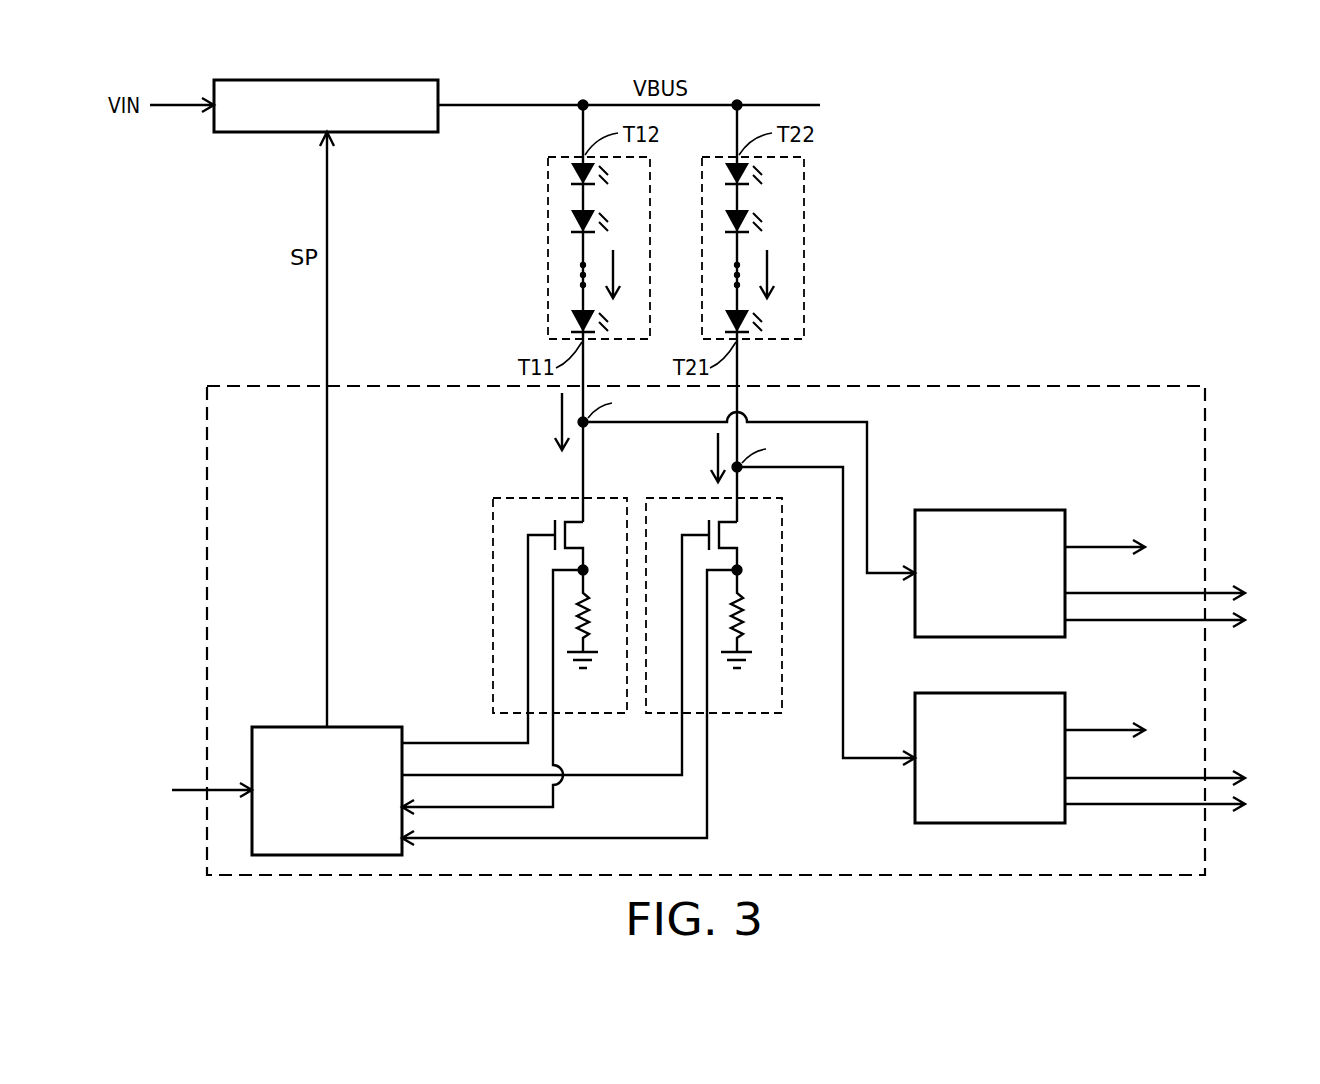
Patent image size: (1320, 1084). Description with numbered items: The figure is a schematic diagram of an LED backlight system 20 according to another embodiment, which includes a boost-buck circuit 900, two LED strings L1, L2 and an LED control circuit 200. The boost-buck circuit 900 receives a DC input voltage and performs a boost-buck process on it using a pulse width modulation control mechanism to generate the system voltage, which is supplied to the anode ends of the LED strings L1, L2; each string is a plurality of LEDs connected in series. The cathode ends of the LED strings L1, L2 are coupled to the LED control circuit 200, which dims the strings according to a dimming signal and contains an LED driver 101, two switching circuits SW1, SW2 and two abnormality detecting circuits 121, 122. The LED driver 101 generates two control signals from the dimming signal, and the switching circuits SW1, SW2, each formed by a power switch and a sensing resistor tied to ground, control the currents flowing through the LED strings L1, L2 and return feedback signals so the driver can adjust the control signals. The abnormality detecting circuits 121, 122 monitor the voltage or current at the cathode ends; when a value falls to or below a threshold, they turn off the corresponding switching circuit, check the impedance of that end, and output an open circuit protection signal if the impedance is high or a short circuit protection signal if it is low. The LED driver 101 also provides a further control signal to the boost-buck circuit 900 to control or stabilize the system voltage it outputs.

The boost-buck circuit 900 is at (440, 92).
The LED control circuit 200 is at (1033, 385).
The LED driver 101 is at (292, 727).
The abnormality detecting circuit 121 is at (1035, 510).
The abnormality detecting circuit 122 is at (1035, 693).
The LED backlight system 20 is at (1284, 876).
The LED string L1 is at (548, 232).
The LED string L2 is at (804, 232).
The switching circuit SW1 is at (493, 590).
The switching circuit SW2 is at (782, 588).